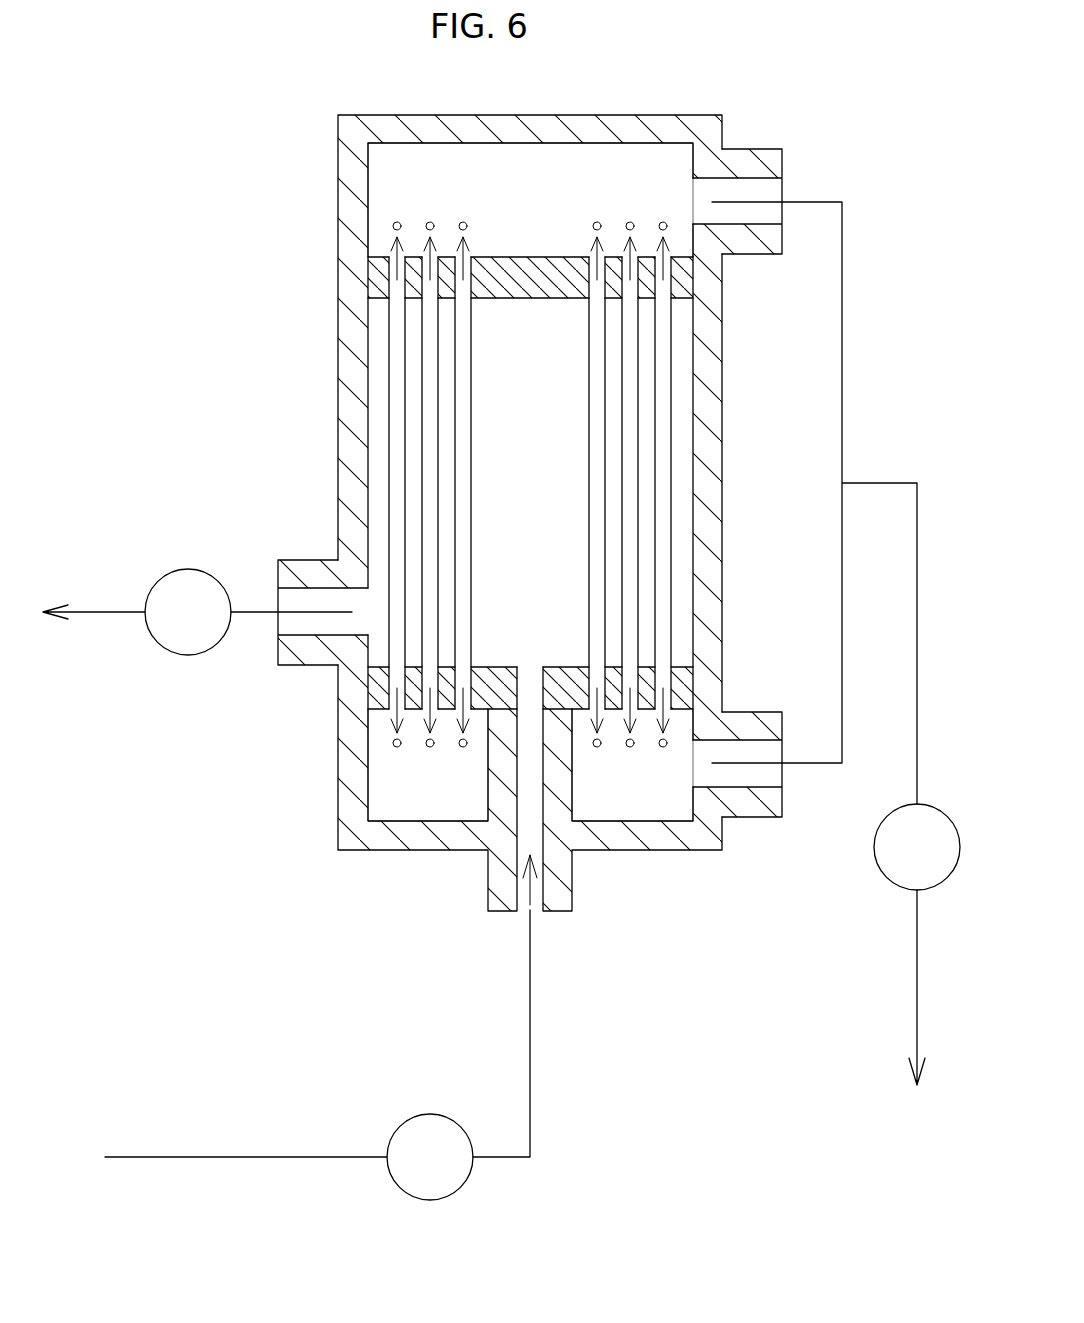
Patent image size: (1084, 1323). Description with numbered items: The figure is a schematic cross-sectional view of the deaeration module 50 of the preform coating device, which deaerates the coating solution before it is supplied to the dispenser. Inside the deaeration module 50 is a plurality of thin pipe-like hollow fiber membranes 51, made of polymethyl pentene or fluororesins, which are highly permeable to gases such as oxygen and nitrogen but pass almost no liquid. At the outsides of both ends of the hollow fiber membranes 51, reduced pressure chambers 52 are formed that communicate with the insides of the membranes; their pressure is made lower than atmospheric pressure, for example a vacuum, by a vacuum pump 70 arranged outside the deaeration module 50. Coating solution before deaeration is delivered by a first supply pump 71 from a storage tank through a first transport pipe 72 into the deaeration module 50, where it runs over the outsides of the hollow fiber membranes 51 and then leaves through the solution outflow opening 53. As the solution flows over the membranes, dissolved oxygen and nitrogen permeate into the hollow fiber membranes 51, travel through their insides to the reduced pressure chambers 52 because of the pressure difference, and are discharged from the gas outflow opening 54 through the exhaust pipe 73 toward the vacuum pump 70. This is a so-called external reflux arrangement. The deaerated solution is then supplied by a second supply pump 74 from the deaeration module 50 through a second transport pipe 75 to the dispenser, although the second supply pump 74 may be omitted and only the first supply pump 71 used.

The deaeration module 50 is at (292, 228).
The hollow fiber membranes 51 is at (463, 482).
The reduced pressure chambers 52 is at (517, 175).
The solution outflow opening 53 is at (288, 622).
The gas outflow opening 54 is at (772, 188).
The vacuum pump 70 is at (878, 868).
The first supply pump 71 is at (460, 1187).
The first transport pipe 72 is at (532, 988).
The exhaust pipe 73 is at (842, 305).
The second supply pump 74 is at (188, 569).
The second transport pipe 75 is at (258, 612).